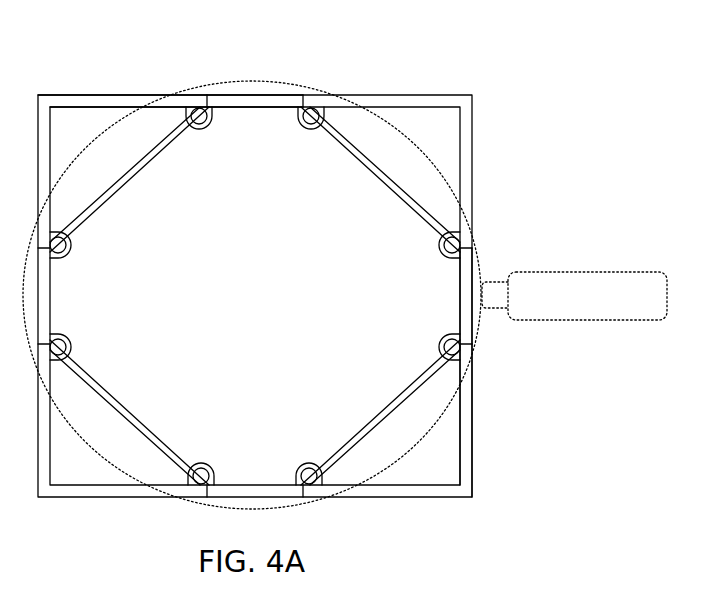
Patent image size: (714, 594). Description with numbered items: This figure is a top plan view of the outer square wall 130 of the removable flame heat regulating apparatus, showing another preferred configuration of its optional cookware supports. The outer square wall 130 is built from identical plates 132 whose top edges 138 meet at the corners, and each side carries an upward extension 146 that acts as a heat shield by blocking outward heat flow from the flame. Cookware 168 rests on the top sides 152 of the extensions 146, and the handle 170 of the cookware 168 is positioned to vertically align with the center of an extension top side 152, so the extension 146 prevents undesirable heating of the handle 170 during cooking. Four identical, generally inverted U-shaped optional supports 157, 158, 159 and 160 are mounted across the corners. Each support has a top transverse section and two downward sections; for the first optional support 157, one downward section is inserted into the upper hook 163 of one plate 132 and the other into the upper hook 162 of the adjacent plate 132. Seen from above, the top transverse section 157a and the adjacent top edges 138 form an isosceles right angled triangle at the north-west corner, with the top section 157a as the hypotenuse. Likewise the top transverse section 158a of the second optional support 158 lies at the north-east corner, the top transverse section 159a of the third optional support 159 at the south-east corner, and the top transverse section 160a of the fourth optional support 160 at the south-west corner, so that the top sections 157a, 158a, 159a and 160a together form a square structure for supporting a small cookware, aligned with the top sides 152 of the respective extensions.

The outer square wall 130 is at (490, 188).
The identical plate 132 is at (398, 93).
The top edge 138 is at (93, 102).
The extension 146 is at (470, 320).
The top side of extension 152 is at (470, 260).
The first optional support 157 is at (117, 213).
The top transverse section of first optional support 157a is at (128, 177).
The second optional support 158 is at (393, 213).
The top transverse section of second optional support 158a is at (387, 177).
The third optional support 159 is at (405, 378).
The top transverse section of third optional support 159a is at (370, 427).
The fourth optional support 160 is at (118, 388).
The top transverse section of fourth optional support 160a is at (133, 427).
The upper hook 162 is at (199, 127).
The upper hook 163 is at (311, 127).
The cookware 168 is at (255, 80).
The handle 170 is at (580, 272).